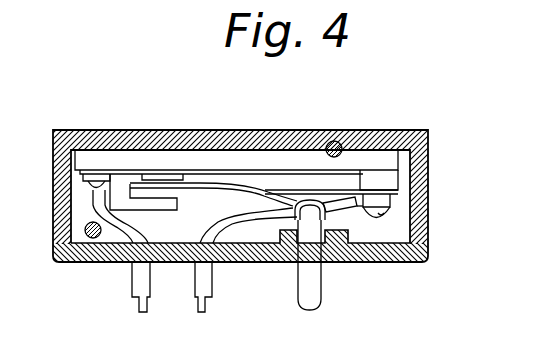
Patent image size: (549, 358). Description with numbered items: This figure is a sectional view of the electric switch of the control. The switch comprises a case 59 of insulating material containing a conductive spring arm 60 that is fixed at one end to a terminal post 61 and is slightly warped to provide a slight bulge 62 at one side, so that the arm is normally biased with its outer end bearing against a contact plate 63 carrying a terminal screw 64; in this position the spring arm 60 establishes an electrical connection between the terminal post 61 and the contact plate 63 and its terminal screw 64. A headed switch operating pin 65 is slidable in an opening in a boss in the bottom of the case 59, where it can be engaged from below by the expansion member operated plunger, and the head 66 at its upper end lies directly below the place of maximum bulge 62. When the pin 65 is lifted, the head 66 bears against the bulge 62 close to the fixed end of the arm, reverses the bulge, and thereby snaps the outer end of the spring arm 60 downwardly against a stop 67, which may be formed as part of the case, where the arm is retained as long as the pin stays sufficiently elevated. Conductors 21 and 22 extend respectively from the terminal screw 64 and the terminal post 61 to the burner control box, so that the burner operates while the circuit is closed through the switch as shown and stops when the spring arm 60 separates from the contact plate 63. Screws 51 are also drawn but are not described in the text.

The conductor 21 is at (137, 284).
The conductor 22 is at (197, 291).
The screw 51 is at (338, 142).
The case 59 is at (199, 152).
The spring arm 60 is at (238, 186).
The terminal post 61 is at (384, 182).
The bulge 62 is at (323, 206).
The contact plate 63 is at (156, 175).
The terminal screw 64 is at (90, 189).
The switch operating pin 65 is at (304, 288).
The head 66 is at (298, 264).
The stop 67 is at (163, 209).